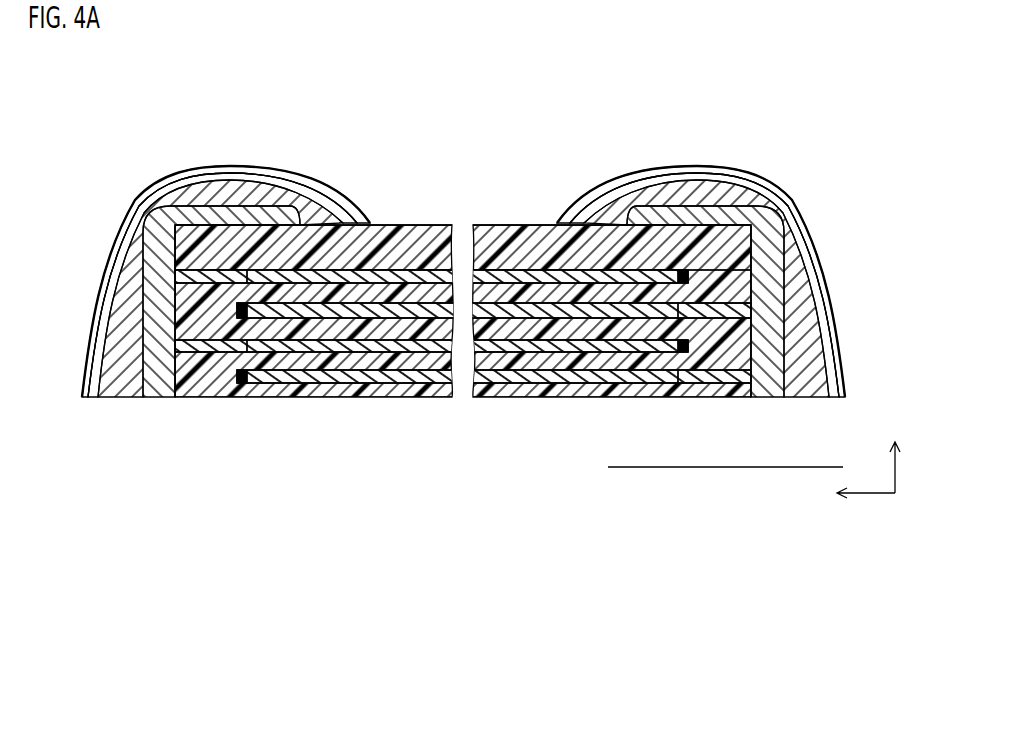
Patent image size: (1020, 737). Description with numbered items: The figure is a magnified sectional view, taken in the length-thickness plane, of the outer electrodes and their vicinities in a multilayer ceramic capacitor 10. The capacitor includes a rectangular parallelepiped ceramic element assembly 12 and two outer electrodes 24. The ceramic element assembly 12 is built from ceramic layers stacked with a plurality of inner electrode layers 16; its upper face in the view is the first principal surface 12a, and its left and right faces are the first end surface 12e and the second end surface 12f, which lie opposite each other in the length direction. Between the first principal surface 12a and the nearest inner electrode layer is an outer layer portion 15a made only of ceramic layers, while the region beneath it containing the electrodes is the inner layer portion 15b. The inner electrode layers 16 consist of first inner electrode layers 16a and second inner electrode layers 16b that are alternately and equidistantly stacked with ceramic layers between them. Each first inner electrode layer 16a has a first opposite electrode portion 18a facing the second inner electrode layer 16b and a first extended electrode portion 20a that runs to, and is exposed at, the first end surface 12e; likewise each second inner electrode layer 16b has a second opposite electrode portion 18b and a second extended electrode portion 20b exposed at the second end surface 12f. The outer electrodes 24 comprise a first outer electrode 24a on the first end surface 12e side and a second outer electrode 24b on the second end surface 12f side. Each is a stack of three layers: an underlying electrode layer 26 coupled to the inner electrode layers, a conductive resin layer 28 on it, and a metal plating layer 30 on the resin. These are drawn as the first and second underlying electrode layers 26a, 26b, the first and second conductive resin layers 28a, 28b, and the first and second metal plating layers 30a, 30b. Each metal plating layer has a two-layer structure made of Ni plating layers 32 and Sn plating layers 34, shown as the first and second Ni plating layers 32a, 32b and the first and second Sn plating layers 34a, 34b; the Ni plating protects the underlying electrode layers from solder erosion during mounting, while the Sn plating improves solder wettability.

The multilayer ceramic capacitor 10 is at (92, 162).
The ceramic element assembly 12 is at (536, 216).
The first principal surface 12a is at (497, 223).
The first end surface 12e is at (177, 366).
The second end surface 12f is at (753, 292).
The outer layer portion 15a is at (433, 247).
The inner layer portion 15b is at (573, 293).
The inner electrode layers 16 is at (130, 502).
The first inner electrode layer 16a is at (277, 278).
The second inner electrode layer 16b is at (347, 310).
The first opposite electrode portion 18a is at (397, 343).
The second opposite electrode portion 18b is at (505, 310).
The first extended electrode portion 20a is at (193, 343).
The second extended electrode portion 20b is at (743, 312).
The outer electrodes 24 is at (273, 502).
The first outer electrode 24a is at (282, 165).
The second outer electrode 24b is at (634, 165).
The underlying electrode layers 26 is at (420, 502).
The first underlying electrode layer 26a is at (160, 250).
The second underlying electrode layer 26b is at (763, 244).
The conductive resin layers 28 is at (561, 502).
The first conductive resin layer 28a is at (125, 275).
The second conductive resin layer 28b is at (797, 275).
The metal plating layers 30 is at (130, 613).
The first metal plating layer 30a is at (257, 100).
The second metal plating layer 30b is at (812, 100).
The Ni plating layers 32 is at (273, 613).
The first Ni plating layer 32a is at (179, 169).
The second Ni plating layer 32b is at (703, 177).
The Sn plating layers 34 is at (420, 613).
The first Sn plating layer 34a is at (224, 169).
The second Sn plating layer 34b is at (742, 177).